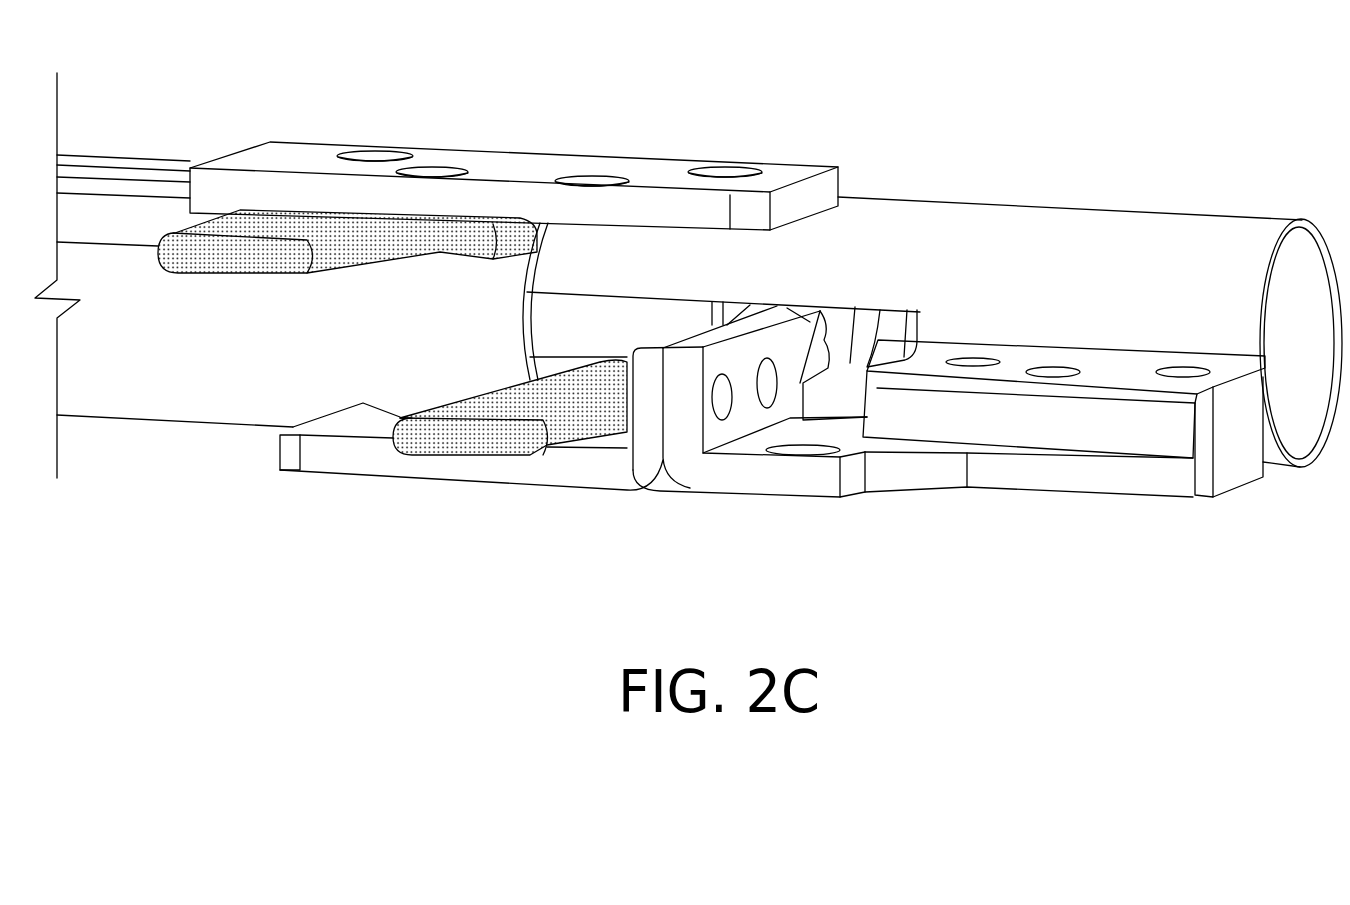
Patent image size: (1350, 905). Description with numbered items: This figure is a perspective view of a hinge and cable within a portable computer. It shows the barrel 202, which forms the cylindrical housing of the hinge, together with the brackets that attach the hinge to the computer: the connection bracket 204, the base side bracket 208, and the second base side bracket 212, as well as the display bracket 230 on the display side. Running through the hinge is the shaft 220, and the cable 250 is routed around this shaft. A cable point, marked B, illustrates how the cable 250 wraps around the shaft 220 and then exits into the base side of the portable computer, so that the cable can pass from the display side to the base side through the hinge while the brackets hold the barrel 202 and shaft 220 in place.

The barrel 202 is at (1113, 213).
The connection bracket 204 is at (1220, 407).
The base side bracket 208 is at (860, 497).
The second base side bracket 212 is at (322, 472).
The shaft 220 is at (623, 300).
The display bracket 230 is at (250, 157).
The cable 250 is at (173, 262).